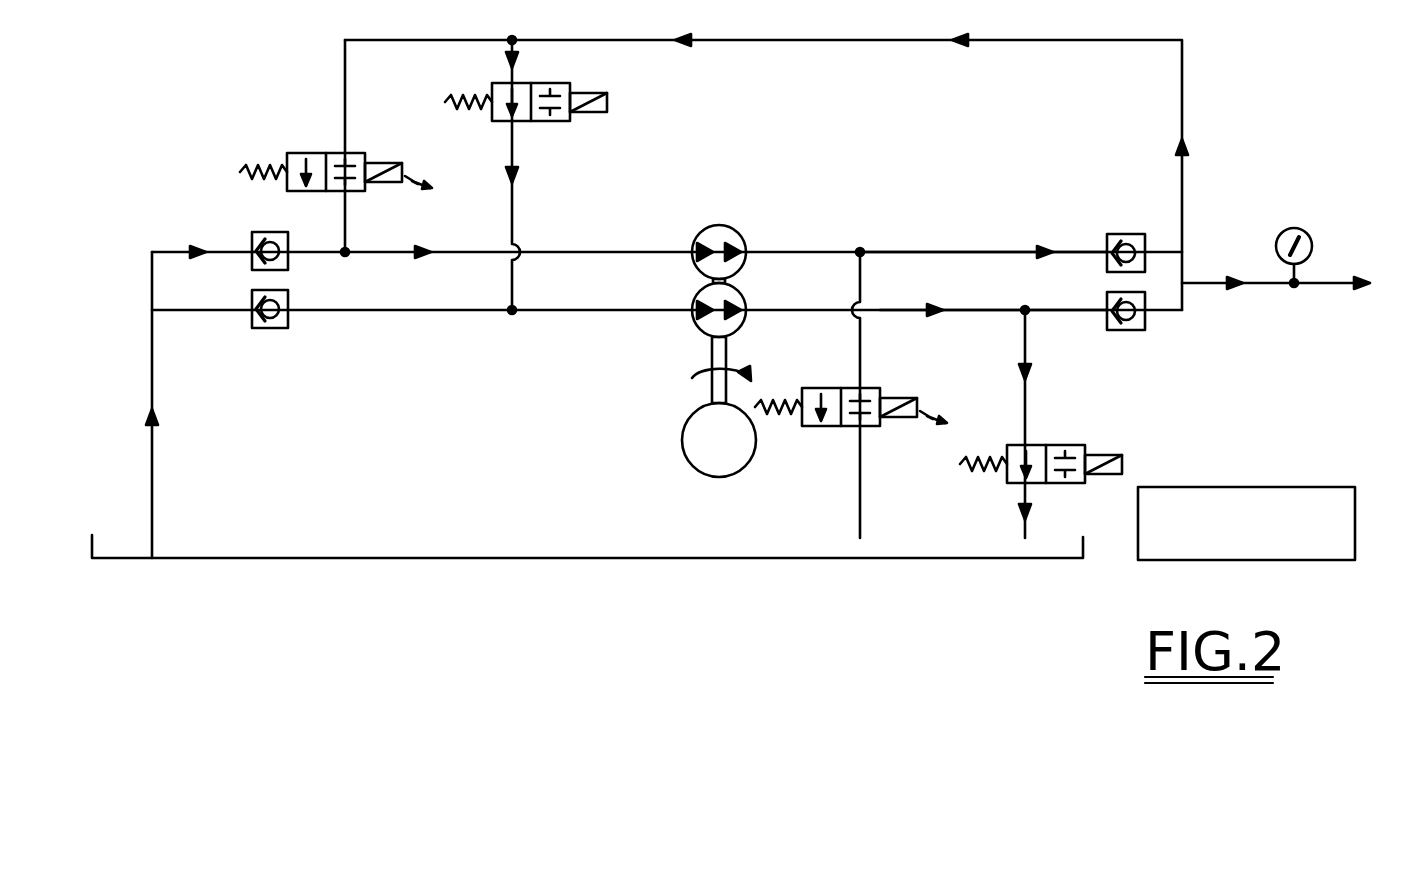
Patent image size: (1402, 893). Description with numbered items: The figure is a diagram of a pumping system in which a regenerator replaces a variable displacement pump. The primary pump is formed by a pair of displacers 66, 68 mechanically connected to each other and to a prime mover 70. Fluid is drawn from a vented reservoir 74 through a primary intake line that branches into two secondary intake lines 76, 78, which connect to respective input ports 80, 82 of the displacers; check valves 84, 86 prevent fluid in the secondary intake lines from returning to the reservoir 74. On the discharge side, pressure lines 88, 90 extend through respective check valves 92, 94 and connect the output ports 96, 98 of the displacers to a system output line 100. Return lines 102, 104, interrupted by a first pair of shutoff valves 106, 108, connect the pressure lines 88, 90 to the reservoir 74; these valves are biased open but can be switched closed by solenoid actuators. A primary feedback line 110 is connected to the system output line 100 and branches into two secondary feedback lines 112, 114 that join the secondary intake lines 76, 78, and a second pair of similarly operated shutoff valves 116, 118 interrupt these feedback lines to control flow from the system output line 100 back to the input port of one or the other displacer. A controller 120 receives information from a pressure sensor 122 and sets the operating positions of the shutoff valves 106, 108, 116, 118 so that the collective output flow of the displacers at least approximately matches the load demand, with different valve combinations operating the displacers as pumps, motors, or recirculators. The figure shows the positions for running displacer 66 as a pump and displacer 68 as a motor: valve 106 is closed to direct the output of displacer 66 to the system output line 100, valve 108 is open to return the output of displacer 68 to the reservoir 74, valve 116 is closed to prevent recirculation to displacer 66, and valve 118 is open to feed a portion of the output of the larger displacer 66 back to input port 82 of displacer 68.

The displacer 66 is at (718, 224).
The displacer 68 is at (718, 318).
The prime mover 70 is at (688, 456).
The vented reservoir 74 is at (332, 560).
The secondary intake line 76 is at (372, 252).
The secondary intake line 78 is at (422, 310).
The input port 80 is at (696, 241).
The input port 82 is at (696, 301).
The check valve 84 is at (256, 236).
The check valve 86 is at (256, 296).
The pressure line 88 is at (950, 252).
The pressure line 90 is at (995, 310).
The check valve 92 is at (1115, 234).
The check valve 94 is at (1115, 293).
The output port 96 is at (742, 241).
The output port 98 is at (742, 301).
The system output line 100 is at (1248, 284).
The return line 102 is at (860, 500).
The return line 104 is at (1028, 415).
The shutoff valve 106 is at (870, 388).
The shutoff valve 108 is at (1082, 445).
The primary feedback line 110 is at (862, 40).
The secondary feedback line 112 is at (345, 82).
The secondary feedback line 114 is at (512, 152).
The shutoff valve 116 is at (353, 153).
The shutoff valve 118 is at (556, 83).
The controller 120 is at (1322, 487).
The pressure sensor 122 is at (1300, 228).